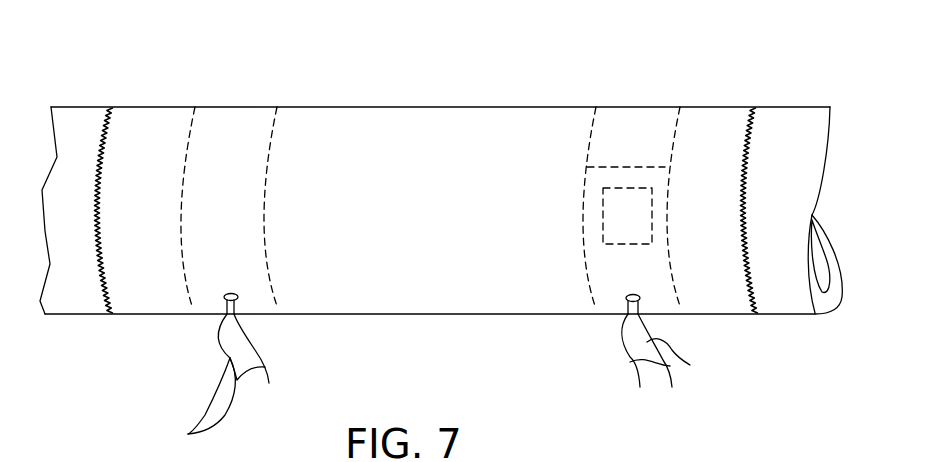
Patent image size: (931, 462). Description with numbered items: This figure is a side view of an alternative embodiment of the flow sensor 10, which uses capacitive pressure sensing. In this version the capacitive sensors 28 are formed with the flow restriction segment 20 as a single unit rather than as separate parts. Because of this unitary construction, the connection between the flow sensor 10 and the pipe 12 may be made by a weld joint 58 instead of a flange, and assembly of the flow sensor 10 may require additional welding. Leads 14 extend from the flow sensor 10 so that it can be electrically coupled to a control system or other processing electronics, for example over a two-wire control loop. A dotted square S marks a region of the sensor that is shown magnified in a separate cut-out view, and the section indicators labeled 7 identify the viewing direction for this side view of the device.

The flow sensor 10 is at (441, 239).
The pipe 12 is at (72, 107).
The flow restriction segment 20 is at (428, 107).
The weld joint 58 is at (100, 190).
The capacitive sensors 28 is at (267, 233).
The dotted square S is at (603, 217).
The leads 14 is at (188, 434).
The section line 7 is at (229, 46).